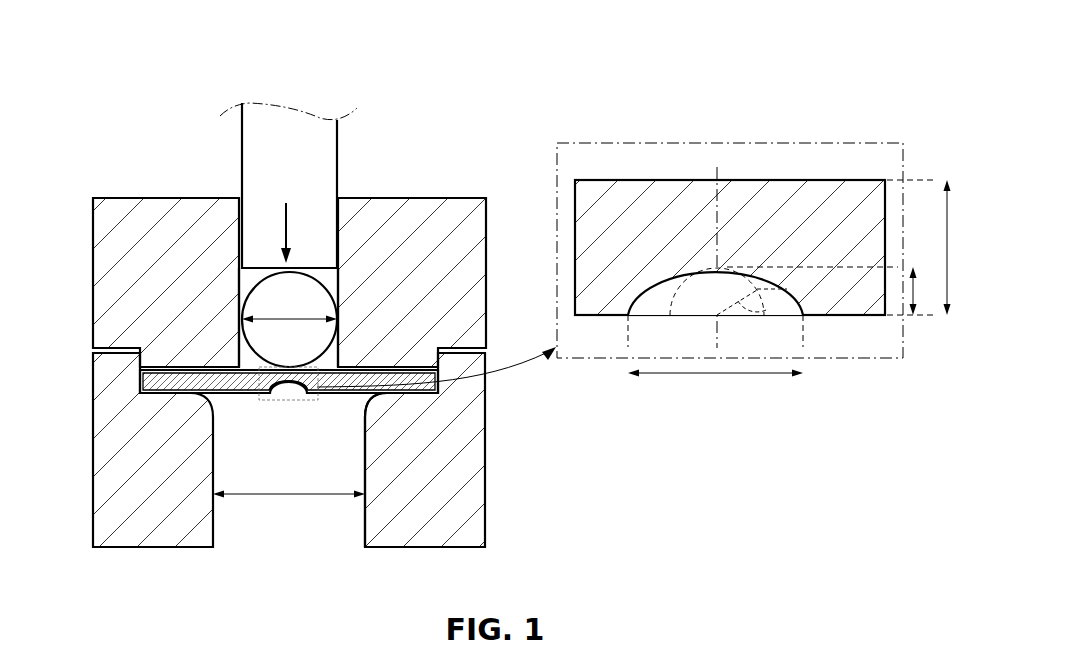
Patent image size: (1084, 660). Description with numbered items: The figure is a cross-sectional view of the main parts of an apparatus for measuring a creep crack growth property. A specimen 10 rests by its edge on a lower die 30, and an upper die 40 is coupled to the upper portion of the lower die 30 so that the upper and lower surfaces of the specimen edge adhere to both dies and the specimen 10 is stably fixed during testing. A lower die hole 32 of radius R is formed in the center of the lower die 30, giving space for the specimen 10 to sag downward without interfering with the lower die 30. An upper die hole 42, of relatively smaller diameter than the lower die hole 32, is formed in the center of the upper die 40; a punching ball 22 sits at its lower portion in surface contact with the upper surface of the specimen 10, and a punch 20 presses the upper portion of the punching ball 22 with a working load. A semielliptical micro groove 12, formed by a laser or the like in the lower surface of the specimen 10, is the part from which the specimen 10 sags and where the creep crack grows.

The specimen 10 is at (142, 378).
The micro groove 12 is at (791, 307).
The punch 20 is at (256, 137).
The punching ball 22 is at (313, 300).
The lower die 30 is at (93, 468).
The lower die hole 32 is at (331, 451).
The upper die 40 is at (93, 240).
The upper die hole 42 is at (247, 283).